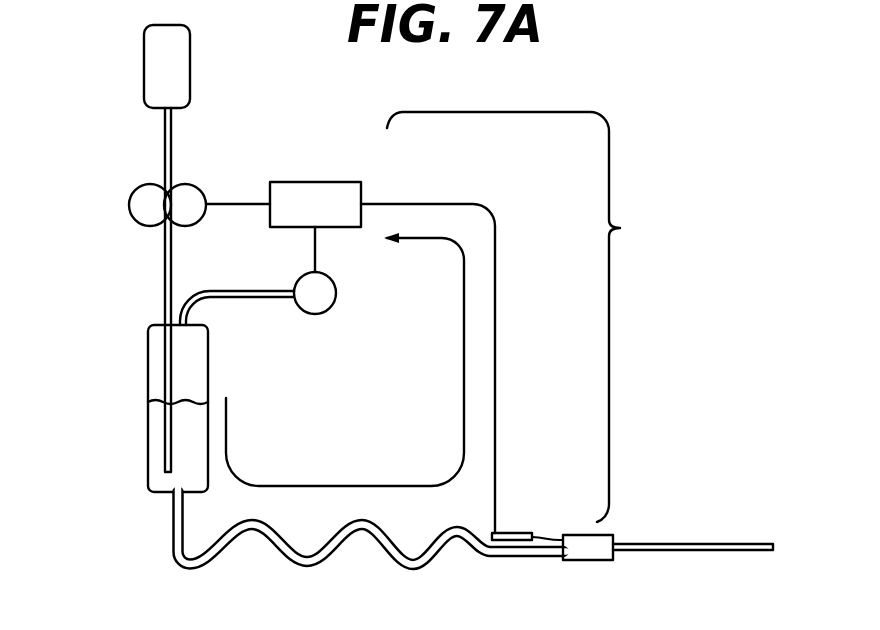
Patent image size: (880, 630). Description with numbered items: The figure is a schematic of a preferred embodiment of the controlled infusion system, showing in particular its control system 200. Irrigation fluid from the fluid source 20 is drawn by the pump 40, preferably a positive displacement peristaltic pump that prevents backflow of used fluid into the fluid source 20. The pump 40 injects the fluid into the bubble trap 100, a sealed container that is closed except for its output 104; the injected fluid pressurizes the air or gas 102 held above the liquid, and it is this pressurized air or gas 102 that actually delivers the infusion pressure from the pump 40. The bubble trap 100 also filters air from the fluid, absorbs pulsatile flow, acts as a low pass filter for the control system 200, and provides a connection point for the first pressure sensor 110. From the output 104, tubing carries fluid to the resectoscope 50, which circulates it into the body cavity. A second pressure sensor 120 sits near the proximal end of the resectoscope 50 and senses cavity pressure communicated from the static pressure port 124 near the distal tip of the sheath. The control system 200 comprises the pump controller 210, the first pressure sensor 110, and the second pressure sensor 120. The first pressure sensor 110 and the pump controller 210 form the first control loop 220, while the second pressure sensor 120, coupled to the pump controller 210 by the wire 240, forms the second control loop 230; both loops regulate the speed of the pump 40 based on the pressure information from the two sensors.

The fluid source 20 is at (190, 72).
The pump 40 is at (131, 197).
The resectoscope 50 is at (662, 550).
The bubble trap 100 is at (138, 440).
The air or gas 102 is at (147, 360).
The output 104 is at (173, 537).
The first pressure sensor 110 is at (337, 292).
The second pressure sensor 120 is at (520, 533).
The static pressure port 124 is at (775, 546).
The control system 200 is at (532, 317).
The pump controller 210 is at (343, 182).
The first control loop 220 is at (236, 232).
The second control loop 230 is at (464, 360).
The wire 240 is at (497, 411).